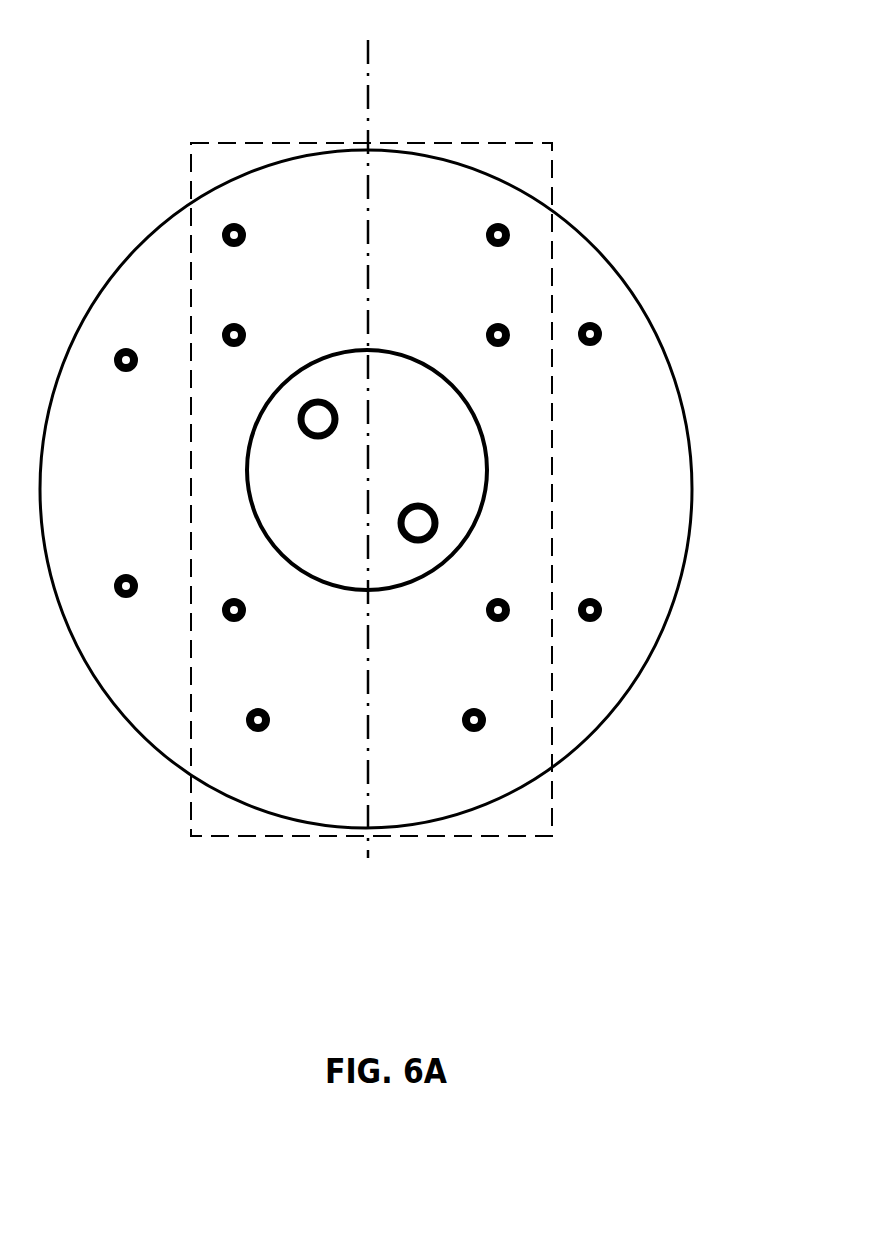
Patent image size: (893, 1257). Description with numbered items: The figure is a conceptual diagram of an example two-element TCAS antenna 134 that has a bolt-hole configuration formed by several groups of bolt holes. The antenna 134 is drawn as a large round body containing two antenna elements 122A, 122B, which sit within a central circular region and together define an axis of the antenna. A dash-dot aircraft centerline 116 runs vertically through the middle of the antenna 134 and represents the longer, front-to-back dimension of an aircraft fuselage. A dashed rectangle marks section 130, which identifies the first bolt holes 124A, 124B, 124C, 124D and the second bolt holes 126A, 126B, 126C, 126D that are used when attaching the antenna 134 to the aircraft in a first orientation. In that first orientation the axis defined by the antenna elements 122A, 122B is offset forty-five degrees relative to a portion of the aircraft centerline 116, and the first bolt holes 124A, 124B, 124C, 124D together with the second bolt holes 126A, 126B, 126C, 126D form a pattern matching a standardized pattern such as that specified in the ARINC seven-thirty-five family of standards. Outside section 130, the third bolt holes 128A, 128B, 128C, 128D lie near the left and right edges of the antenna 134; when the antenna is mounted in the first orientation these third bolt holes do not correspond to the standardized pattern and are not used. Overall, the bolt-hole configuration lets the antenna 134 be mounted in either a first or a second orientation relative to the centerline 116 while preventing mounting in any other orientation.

The aircraft centerline 116 is at (371, 50).
The section 130 is at (553, 168).
The two-element TCAS antenna 134 is at (662, 344).
The antenna element 122A is at (326, 437).
The antenna element 122B is at (409, 507).
The first bolt hole 124A is at (241, 224).
The first bolt hole 124B is at (491, 224).
The first bolt hole 124C is at (263, 708).
The first bolt hole 124D is at (469, 708).
The second bolt hole 126A is at (241, 326).
The second bolt hole 126B is at (491, 326).
The second bolt hole 126C is at (241, 622).
The second bolt hole 126D is at (491, 622).
The third bolt hole 128A is at (136, 371).
The third bolt hole 128B is at (588, 347).
The third bolt hole 128C is at (128, 573).
The third bolt hole 128D is at (596, 598).